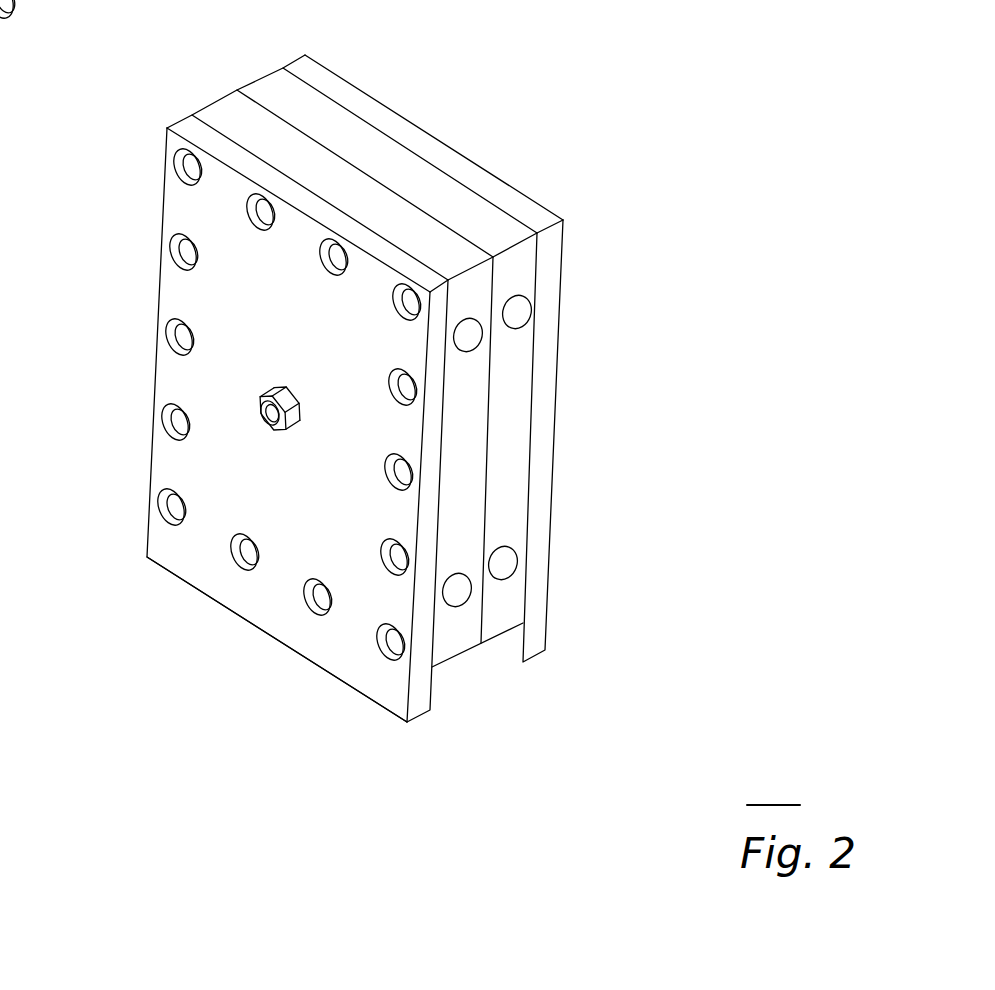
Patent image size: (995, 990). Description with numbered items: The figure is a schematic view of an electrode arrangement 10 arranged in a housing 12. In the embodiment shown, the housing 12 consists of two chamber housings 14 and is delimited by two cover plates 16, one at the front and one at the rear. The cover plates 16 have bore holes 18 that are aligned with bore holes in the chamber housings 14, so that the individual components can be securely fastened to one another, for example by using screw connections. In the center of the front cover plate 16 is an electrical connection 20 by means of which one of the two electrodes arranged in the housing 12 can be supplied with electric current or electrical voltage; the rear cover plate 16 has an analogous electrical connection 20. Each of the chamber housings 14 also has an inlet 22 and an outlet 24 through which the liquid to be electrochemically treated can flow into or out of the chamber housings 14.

The electrode arrangement 10 is at (371, 48).
The housing 12 is at (418, 170).
The chamber housing 14 is at (232, 75).
The cover plate 16 is at (315, 703).
The bore holes 18 is at (183, 248).
The electrical connection 20 is at (257, 415).
The inlet 22 is at (533, 295).
The outlet 24 is at (518, 552).